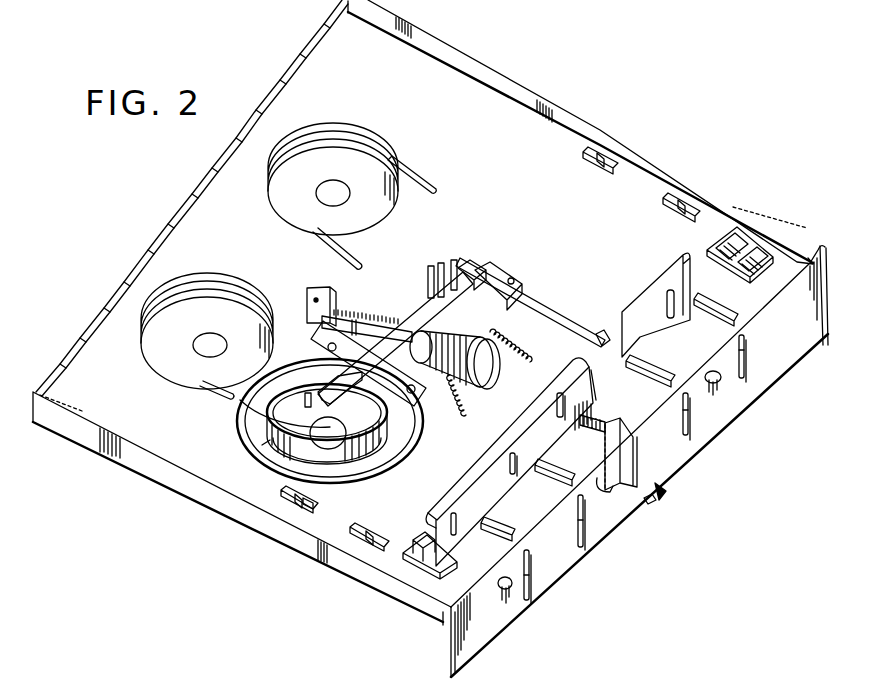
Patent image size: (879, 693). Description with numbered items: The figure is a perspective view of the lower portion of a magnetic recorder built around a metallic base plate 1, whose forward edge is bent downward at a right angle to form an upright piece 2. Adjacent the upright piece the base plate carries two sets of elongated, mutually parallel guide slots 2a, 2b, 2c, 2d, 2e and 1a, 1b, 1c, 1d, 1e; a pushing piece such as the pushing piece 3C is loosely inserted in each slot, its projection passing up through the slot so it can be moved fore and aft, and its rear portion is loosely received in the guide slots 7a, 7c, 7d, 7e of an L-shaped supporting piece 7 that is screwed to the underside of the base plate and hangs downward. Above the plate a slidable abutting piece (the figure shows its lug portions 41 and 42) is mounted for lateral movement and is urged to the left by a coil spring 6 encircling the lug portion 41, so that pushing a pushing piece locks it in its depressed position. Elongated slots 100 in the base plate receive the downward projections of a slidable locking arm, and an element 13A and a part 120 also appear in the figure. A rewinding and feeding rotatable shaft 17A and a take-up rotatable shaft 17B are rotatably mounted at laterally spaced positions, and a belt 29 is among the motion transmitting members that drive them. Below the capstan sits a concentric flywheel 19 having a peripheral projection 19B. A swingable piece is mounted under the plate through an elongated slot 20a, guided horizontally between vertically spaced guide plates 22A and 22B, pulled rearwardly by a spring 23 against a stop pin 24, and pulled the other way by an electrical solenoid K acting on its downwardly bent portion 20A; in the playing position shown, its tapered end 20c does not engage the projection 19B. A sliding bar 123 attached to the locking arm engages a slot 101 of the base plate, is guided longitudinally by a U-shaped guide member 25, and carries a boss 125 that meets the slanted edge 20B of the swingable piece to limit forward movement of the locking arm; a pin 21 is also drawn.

The base plate 1 is at (466, 64).
The upright piece 2 is at (738, 408).
The guide slot 2a is at (745, 362).
The guide slot 2b is at (689, 417).
The guide slot 2c is at (650, 503).
The guide slot 2d is at (596, 540).
The guide slot 2e is at (540, 583).
The pushing piece 3C is at (665, 490).
The coil spring 6 is at (711, 246).
The L-shaped supporting piece 7 is at (633, 296).
The guide slot 7a is at (665, 290).
The guide slot 7c is at (566, 420).
The guide slot 7d is at (513, 476).
The guide slot 7e is at (457, 546).
The guide slot 1a is at (718, 314).
The guide slot 1b is at (654, 371).
The guide slot 1c is at (608, 428).
The guide slot 1d is at (563, 485).
The guide slot 1e is at (492, 523).
The tab 13A is at (310, 506).
The rewinding and feeding rotatable shaft 17A is at (316, 193).
The take-up rotatable shaft 17B is at (200, 345).
The flywheel 19 is at (365, 470).
The projection 19B is at (262, 445).
The downwardly bent portion 20A is at (418, 395).
The elongated slot 20a is at (421, 288).
The slanted edge 20B is at (457, 257).
The tapered end 20c is at (380, 458).
The pin 21 is at (435, 263).
The guide plate 22A is at (308, 305).
The guide plate 22B is at (410, 423).
The spring 23 is at (372, 327).
The stop pin 24 is at (378, 327).
The U-shaped guide member 25 is at (533, 282).
The belt 29 is at (422, 184).
The lug portion 41 is at (766, 242).
The lug portion 42 is at (413, 540).
The elongated slot 100 is at (598, 147).
The slot 120 is at (605, 172).
The slot 101 is at (596, 334).
The sliding bar 123 is at (550, 313).
The boss 125 is at (473, 257).
The electrical solenoid K is at (492, 362).